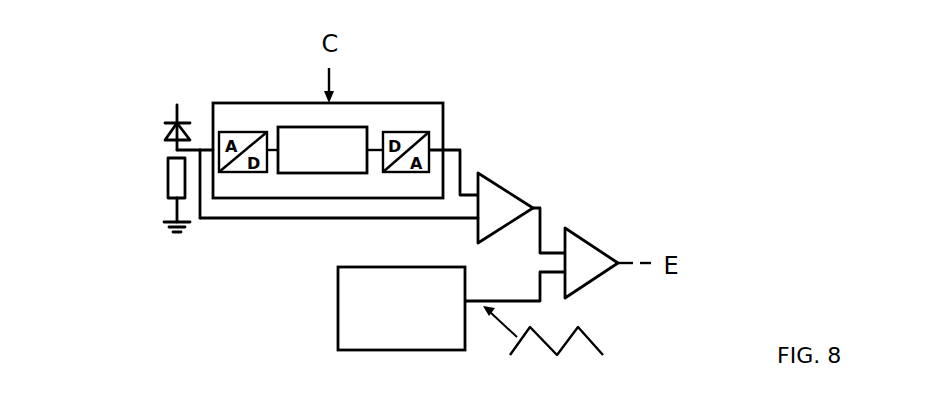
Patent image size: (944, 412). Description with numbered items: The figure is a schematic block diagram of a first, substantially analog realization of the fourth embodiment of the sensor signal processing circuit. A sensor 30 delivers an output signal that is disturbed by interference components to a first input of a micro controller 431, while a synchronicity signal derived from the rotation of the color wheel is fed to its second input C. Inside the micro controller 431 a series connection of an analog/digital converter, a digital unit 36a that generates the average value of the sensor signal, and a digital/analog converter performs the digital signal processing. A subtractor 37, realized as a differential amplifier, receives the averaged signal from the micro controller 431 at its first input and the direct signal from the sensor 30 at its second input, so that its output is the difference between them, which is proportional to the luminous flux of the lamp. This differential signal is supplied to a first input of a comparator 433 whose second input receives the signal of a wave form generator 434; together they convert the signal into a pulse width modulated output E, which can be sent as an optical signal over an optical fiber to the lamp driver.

The sensor 30 is at (146, 137).
The micro controller 431 is at (450, 69).
The digital unit 36a is at (322, 150).
The subtractor 37 is at (493, 203).
The comparator 433 is at (578, 262).
The wave form generator 434 is at (401, 308).